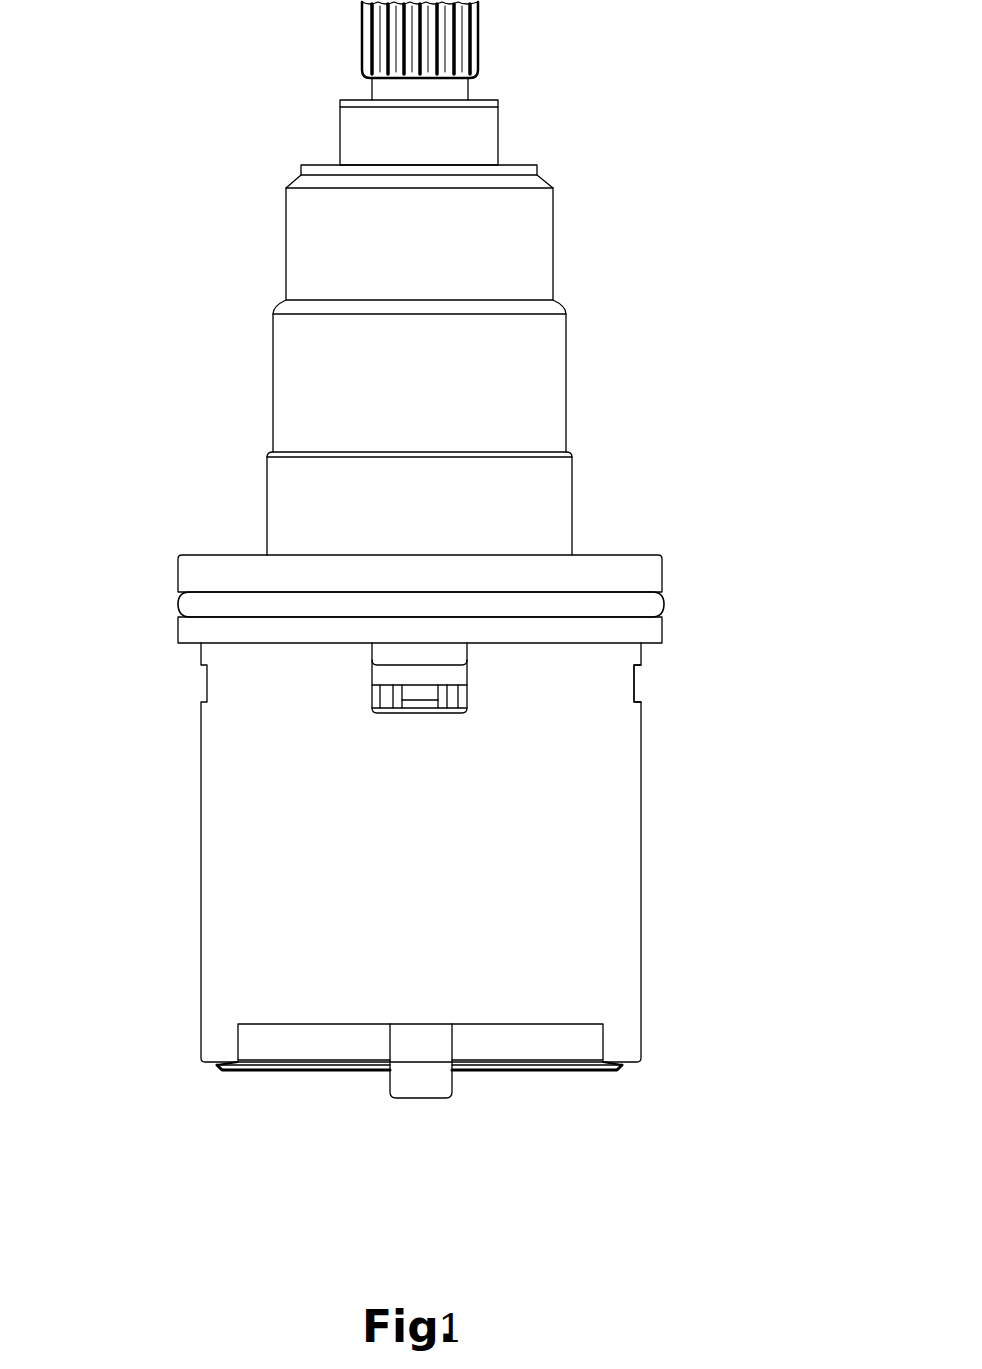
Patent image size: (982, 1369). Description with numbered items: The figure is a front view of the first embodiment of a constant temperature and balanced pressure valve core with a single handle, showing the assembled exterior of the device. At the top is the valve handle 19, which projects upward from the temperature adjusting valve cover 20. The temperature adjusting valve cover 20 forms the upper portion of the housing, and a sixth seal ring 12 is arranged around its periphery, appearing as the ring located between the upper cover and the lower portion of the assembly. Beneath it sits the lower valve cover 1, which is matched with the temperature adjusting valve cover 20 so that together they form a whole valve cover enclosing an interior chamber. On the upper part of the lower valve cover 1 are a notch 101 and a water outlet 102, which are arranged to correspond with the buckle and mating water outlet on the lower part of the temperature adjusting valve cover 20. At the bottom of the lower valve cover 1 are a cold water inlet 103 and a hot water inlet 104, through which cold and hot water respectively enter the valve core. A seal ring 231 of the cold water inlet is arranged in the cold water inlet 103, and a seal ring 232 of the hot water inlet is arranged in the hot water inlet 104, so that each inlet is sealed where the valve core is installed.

The valve handle 19 is at (362, 50).
The temperature adjusting valve cover 20 is at (295, 393).
The sixth seal ring 12 is at (172, 600).
The lower valve cover 1 is at (637, 973).
The notch 101 is at (641, 685).
The water outlet 102 is at (453, 677).
The cold water inlet 103 is at (545, 1085).
The hot water inlet 104 is at (294, 1085).
The seal ring of the cold water inlet 231 is at (610, 1073).
The seal ring of the hot water inlet 232 is at (217, 1073).